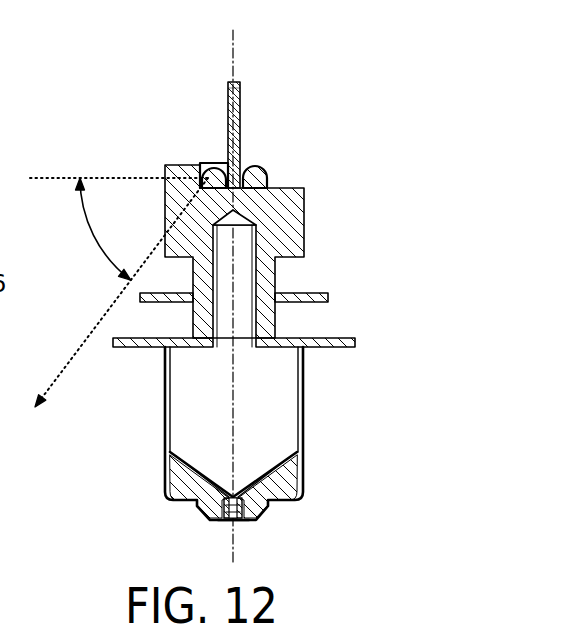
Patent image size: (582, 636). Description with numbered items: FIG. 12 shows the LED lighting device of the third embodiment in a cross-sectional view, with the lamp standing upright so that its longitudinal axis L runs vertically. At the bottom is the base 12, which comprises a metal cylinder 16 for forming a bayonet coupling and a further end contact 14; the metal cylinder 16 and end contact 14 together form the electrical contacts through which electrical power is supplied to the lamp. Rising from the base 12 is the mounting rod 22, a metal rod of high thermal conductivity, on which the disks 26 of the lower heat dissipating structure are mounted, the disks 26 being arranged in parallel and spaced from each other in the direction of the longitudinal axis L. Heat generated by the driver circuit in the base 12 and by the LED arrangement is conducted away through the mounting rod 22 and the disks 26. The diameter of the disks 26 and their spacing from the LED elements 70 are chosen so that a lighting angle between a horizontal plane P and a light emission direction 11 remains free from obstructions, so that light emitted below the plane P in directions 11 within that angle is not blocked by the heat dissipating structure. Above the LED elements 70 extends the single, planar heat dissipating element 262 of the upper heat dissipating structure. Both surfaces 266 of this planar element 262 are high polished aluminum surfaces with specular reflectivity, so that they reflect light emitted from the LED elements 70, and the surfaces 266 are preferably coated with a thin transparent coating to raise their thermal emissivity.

The planar heat dissipating element 262 is at (228, 88).
The surfaces of the planar heat dissipation element 266 is at (249, 98).
The LED elements 70 is at (213, 166).
The disks 26 is at (303, 256).
The mounting rod 22 is at (277, 325).
The metal cylinder 16 is at (163, 407).
The end contact 14 is at (238, 522).
The base 12 is at (101, 477).
The light emission direction 11 is at (121, 292).
The center axis D is at (235, 295).
The horizontal plane P is at (118, 161).
The longitudinal axis L is at (233, 52).